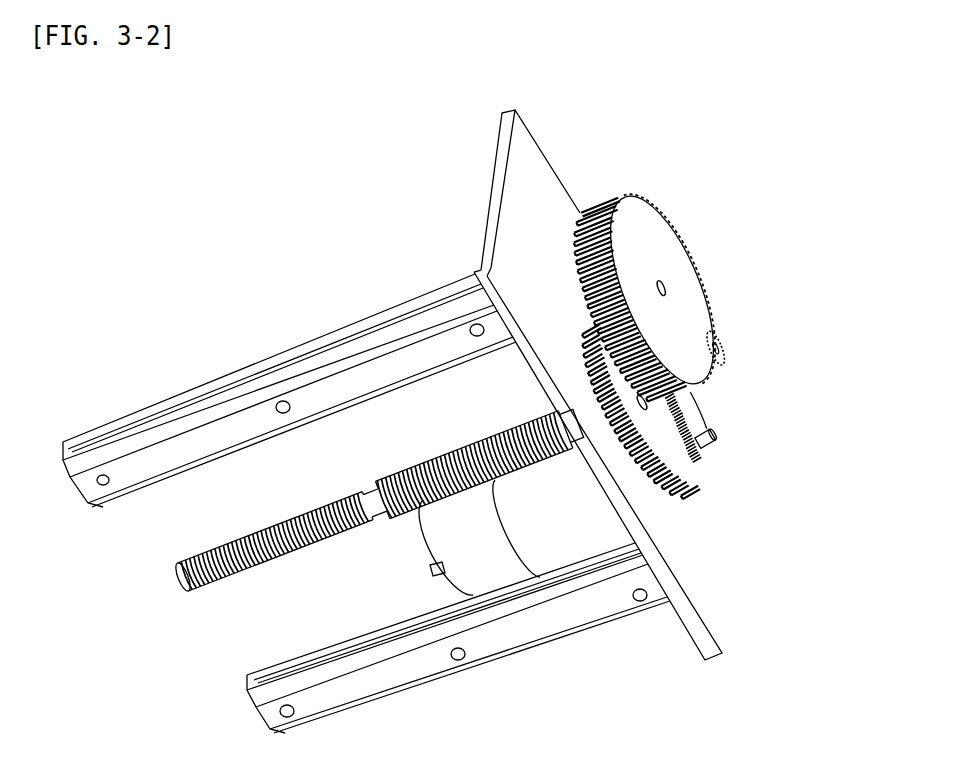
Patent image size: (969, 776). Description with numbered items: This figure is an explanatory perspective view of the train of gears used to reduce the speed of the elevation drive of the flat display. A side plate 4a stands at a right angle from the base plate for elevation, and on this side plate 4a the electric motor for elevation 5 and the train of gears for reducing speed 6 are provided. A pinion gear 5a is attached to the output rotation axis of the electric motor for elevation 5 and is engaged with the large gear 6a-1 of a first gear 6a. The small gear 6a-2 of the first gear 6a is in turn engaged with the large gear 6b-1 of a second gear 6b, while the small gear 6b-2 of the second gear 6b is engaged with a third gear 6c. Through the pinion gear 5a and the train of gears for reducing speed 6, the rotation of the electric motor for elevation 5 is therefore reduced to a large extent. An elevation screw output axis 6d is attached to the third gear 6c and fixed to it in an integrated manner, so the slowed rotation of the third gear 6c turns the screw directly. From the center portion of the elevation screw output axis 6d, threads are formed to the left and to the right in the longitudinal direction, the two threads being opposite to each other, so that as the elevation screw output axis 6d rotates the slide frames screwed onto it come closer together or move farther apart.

The side plate 4a is at (520, 178).
The electric motor for elevation 5 is at (568, 538).
The pinion gear 5a is at (697, 463).
The train of gears for reducing speed 6 is at (719, 269).
The first gear 6a is at (826, 362).
The large gear of the first gear 6a-1 is at (688, 408).
The small gear of the first gear 6a-2 is at (724, 367).
The second gear 6b is at (643, 97).
The large gear of the second gear 6b-1 is at (633, 217).
The small gear of the second gear 6b-2 is at (595, 305).
The third gear 6c is at (650, 448).
The elevation screw output axis 6d is at (335, 493).